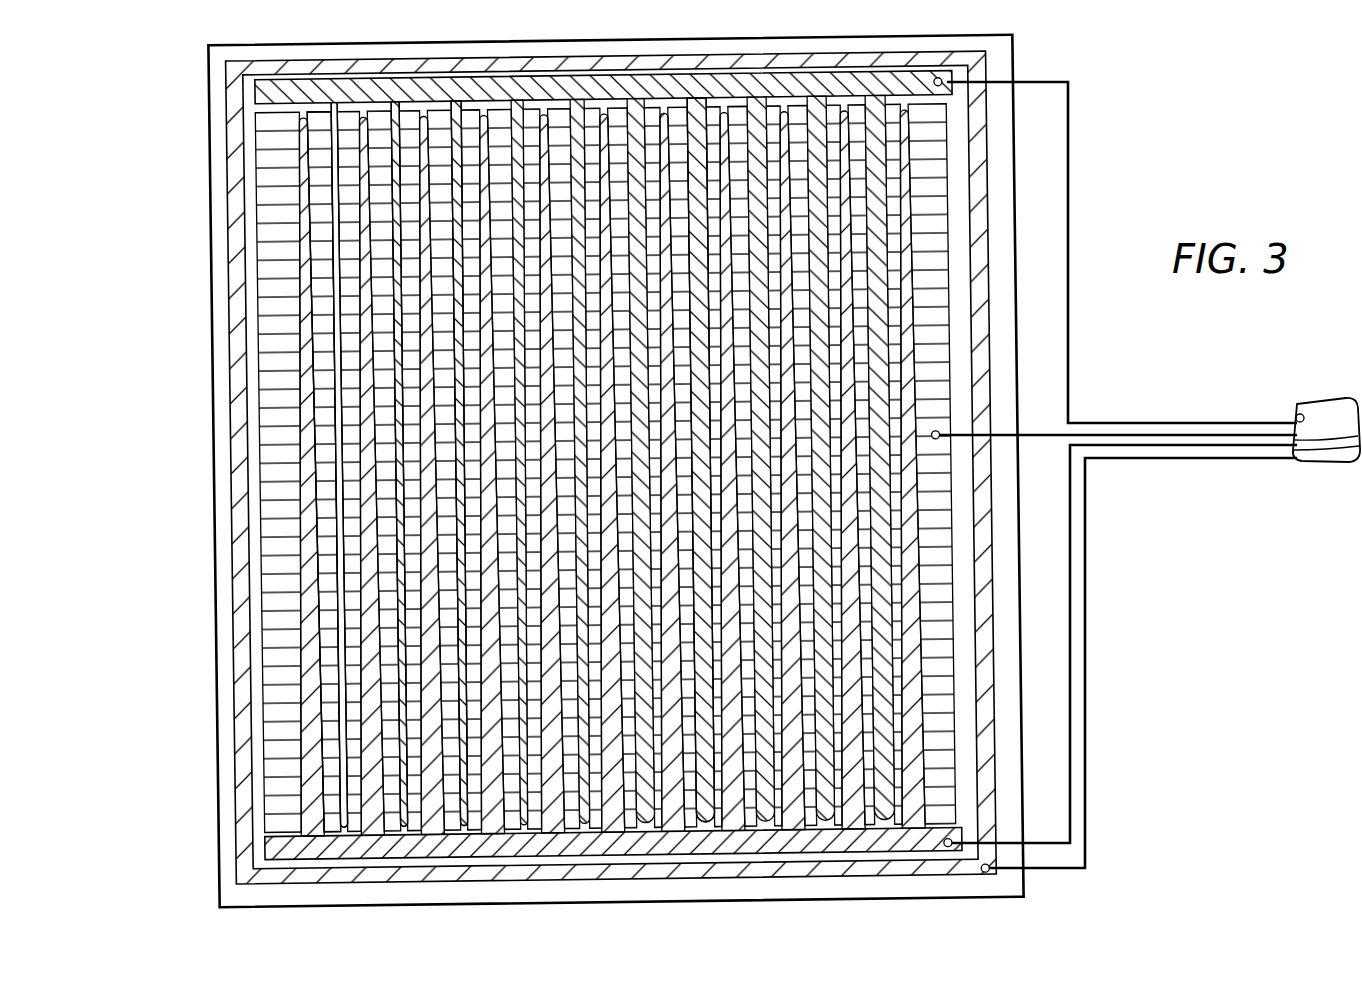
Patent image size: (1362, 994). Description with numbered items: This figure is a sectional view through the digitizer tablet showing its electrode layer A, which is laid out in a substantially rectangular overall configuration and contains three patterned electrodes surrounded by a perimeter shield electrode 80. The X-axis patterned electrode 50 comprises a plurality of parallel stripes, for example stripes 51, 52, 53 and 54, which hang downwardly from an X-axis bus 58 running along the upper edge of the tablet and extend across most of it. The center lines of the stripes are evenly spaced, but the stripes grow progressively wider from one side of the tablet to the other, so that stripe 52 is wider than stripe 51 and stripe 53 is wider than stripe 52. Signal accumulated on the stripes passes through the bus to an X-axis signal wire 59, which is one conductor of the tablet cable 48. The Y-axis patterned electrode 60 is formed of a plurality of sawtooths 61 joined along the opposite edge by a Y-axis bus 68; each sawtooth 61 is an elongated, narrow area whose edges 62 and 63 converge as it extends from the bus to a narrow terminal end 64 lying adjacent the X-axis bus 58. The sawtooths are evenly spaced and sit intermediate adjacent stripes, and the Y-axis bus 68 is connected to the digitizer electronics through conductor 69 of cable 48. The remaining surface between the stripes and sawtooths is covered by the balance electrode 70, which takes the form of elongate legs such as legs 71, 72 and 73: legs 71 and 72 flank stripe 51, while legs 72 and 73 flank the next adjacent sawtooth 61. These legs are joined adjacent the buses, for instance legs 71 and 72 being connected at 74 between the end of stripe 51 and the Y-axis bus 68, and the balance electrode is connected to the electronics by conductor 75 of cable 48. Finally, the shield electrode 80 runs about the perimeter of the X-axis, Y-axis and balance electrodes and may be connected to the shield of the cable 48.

The digitizer tablet cable 48 is at (1322, 410).
The X-axis patterned electrode 50 is at (859, 74).
The stripe 51 is at (338, 130).
The stripe 52 is at (396, 135).
The stripe 53 is at (460, 135).
The stripe 54 is at (698, 117).
The X-axis bus 58 is at (750, 82).
The X-axis signal wire 59 is at (1069, 176).
The Y-axis patterned electrode 60 is at (900, 838).
The sawtooth 61 is at (372, 741).
The edge of sawtooth 62 is at (285, 562).
The edge of sawtooth 63 is at (328, 541).
The terminal end 64 is at (300, 117).
The Y-axis bus 68 is at (738, 845).
The conductor 69 is at (1085, 803).
The balance electrode 70 is at (264, 432).
The leg 71 is at (318, 226).
The leg 72 is at (350, 366).
The leg 73 is at (384, 311).
The connection of legs 74 is at (345, 832).
The conductor 75 is at (1032, 435).
The perimeter shield electrode 80 is at (222, 498).
The electrode layer A is at (192, 258).